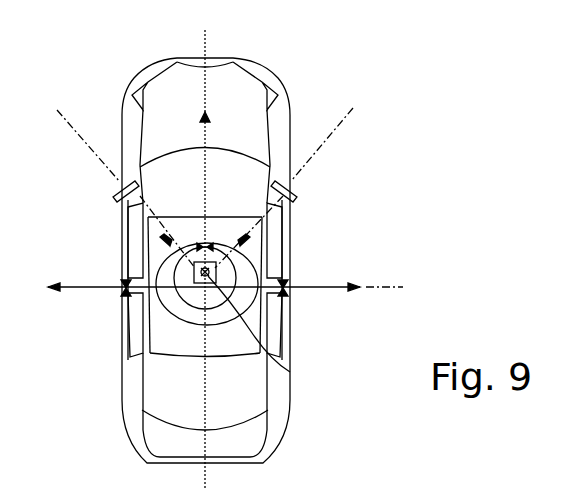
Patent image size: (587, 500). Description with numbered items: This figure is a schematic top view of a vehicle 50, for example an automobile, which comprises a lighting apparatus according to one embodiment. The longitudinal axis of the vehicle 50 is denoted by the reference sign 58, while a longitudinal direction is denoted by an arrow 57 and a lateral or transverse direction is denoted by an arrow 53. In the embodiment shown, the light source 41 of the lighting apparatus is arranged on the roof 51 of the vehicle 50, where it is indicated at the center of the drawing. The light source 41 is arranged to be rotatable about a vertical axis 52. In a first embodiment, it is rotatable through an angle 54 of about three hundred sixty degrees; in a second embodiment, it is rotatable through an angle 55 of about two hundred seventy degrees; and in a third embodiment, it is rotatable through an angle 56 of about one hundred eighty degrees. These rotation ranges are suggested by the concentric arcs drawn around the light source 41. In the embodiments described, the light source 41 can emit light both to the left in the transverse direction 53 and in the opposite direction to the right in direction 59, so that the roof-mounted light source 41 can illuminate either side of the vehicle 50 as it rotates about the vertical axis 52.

The light source 41 is at (216, 270).
The vehicle 50 is at (270, 107).
The roof 51 is at (235, 228).
The vertical axis 52 is at (267, 303).
The transverse direction 53 is at (78, 283).
The angle 54 is at (262, 335).
The angle 55 is at (290, 372).
The angle 56 is at (147, 360).
The longitudinal direction 57 is at (197, 141).
The longitudinal axis 58 is at (205, 43).
The direction to the right 59 is at (340, 293).